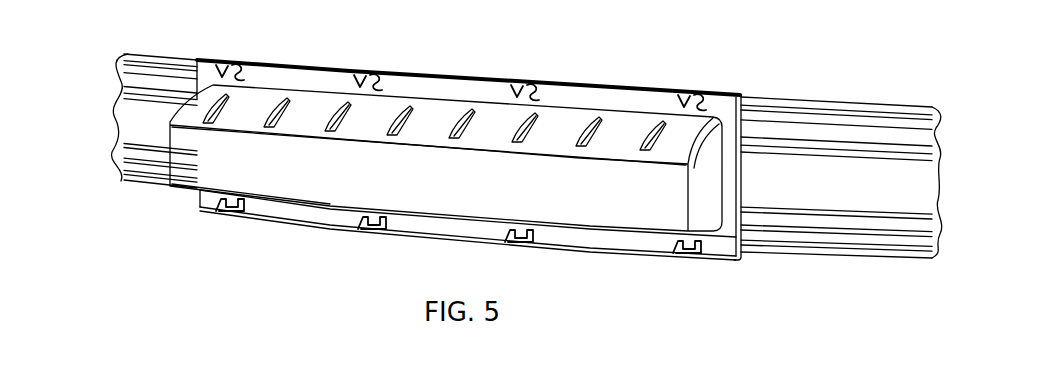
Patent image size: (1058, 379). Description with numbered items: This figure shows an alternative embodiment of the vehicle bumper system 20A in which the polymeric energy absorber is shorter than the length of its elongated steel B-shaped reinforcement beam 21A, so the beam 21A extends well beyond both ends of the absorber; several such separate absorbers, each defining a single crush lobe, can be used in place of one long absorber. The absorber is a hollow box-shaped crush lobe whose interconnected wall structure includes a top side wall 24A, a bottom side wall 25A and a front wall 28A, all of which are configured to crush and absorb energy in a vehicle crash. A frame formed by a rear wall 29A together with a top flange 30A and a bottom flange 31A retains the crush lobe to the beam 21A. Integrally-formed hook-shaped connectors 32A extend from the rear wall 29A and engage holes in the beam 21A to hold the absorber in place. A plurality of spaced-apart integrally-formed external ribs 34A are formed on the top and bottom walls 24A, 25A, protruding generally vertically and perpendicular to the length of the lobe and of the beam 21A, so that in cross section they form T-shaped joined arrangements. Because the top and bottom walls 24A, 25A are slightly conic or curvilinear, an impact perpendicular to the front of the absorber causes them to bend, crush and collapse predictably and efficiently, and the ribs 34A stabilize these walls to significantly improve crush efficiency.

The vehicle bumper system 20A is at (112, 52).
The reinforcement beam 21A is at (810, 100).
The top side wall 24A is at (497, 120).
The bottom side wall 25A is at (460, 228).
The front wall 28A is at (207, 163).
The rear wall 29A is at (727, 192).
The top flange 30A is at (632, 90).
The bottom flange 31A is at (562, 240).
The hook-shaped connectors 32A is at (233, 60).
The external ribs 34A is at (281, 100).